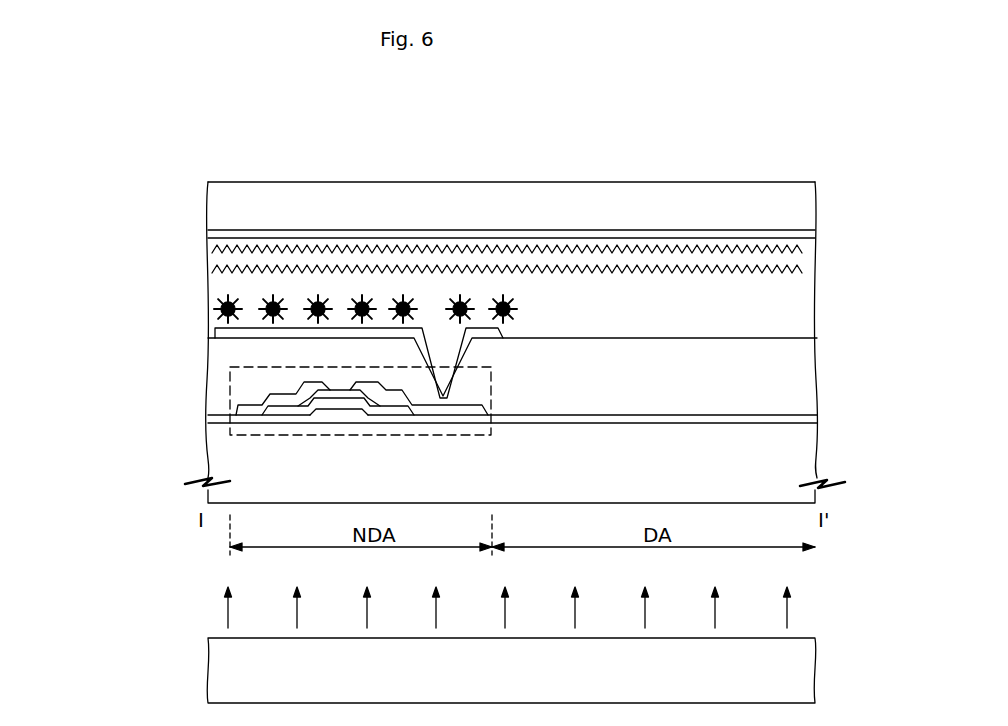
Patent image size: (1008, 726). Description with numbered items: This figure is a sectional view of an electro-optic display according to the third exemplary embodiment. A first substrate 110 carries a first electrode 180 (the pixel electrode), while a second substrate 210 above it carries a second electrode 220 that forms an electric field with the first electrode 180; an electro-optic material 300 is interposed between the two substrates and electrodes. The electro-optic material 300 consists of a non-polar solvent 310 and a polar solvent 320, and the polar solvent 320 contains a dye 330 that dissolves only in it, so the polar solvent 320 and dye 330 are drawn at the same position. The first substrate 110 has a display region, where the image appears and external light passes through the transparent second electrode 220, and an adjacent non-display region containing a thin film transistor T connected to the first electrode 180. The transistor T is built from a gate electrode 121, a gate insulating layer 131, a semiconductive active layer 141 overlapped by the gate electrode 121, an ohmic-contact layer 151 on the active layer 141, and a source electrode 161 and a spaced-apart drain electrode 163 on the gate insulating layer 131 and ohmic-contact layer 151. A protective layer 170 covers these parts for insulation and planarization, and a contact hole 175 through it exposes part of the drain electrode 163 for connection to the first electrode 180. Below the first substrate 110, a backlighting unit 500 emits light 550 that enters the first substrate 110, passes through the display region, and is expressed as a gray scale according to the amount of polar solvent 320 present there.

The first substrate 110 is at (807, 460).
The gate electrode 121 is at (337, 420).
The gate insulating layer 131 is at (807, 417).
The semiconductive active layer 141 is at (287, 408).
The ohmic-contact layer 151 is at (392, 405).
The source electrode 161 is at (247, 410).
The drain electrode 163 is at (443, 410).
The protective layer 170 is at (807, 372).
The contact hole 175 is at (444, 340).
The first electrode 180 is at (213, 330).
The second substrate 210 is at (807, 200).
The second electrode 220 is at (807, 232).
The electro-optic material 300 is at (419, 279).
The non-polar solvent 310 is at (210, 249).
The polar solvent 320 is at (303, 309).
The dye 330 is at (217, 308).
The backlighting unit 500 is at (813, 670).
The light 550 is at (796, 608).
The thin film transistor T is at (331, 424).